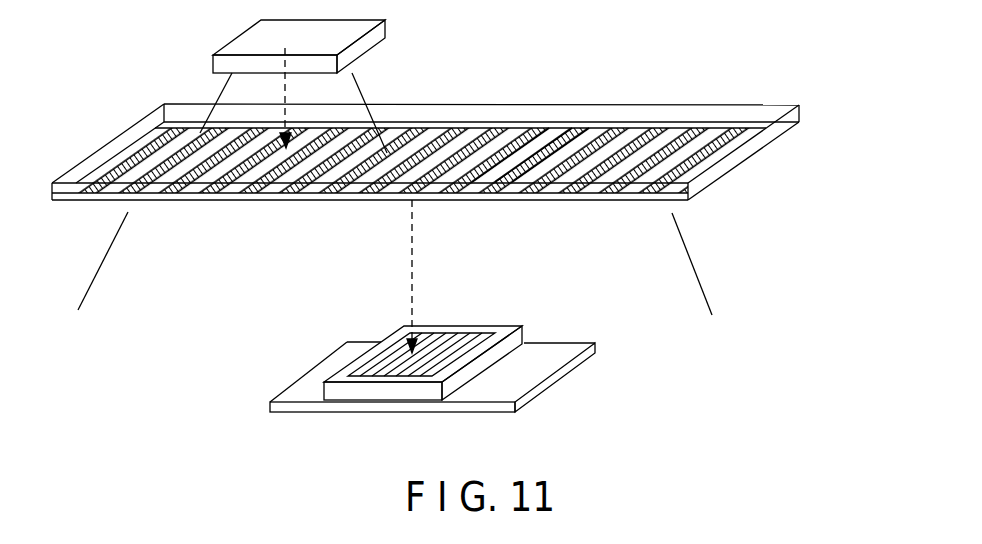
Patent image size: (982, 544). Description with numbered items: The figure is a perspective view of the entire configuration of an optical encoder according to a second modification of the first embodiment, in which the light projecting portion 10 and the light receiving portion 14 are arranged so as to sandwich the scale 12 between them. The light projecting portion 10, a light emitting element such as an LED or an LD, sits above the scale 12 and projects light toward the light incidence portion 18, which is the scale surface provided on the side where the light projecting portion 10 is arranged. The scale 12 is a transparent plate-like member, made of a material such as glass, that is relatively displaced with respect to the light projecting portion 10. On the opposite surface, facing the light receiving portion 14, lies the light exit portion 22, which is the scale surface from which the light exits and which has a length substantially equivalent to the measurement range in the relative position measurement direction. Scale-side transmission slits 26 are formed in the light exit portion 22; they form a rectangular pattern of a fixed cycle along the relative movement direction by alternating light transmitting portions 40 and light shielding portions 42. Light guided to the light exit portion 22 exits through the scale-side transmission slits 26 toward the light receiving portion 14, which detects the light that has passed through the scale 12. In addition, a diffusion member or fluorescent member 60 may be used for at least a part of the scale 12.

The light projecting portion 10 is at (212, 63).
The scale 12 is at (801, 107).
The light receiving portion 14 is at (352, 361).
The light incidence portion 18 is at (288, 137).
The light exit portion 22 is at (730, 167).
The scale-side transmission slits 26 is at (732, 160).
The light transmitting portions 40 is at (550, 138).
The light shielding portions 42 is at (568, 135).
The diffusion member or fluorescent member 60 is at (726, 176).